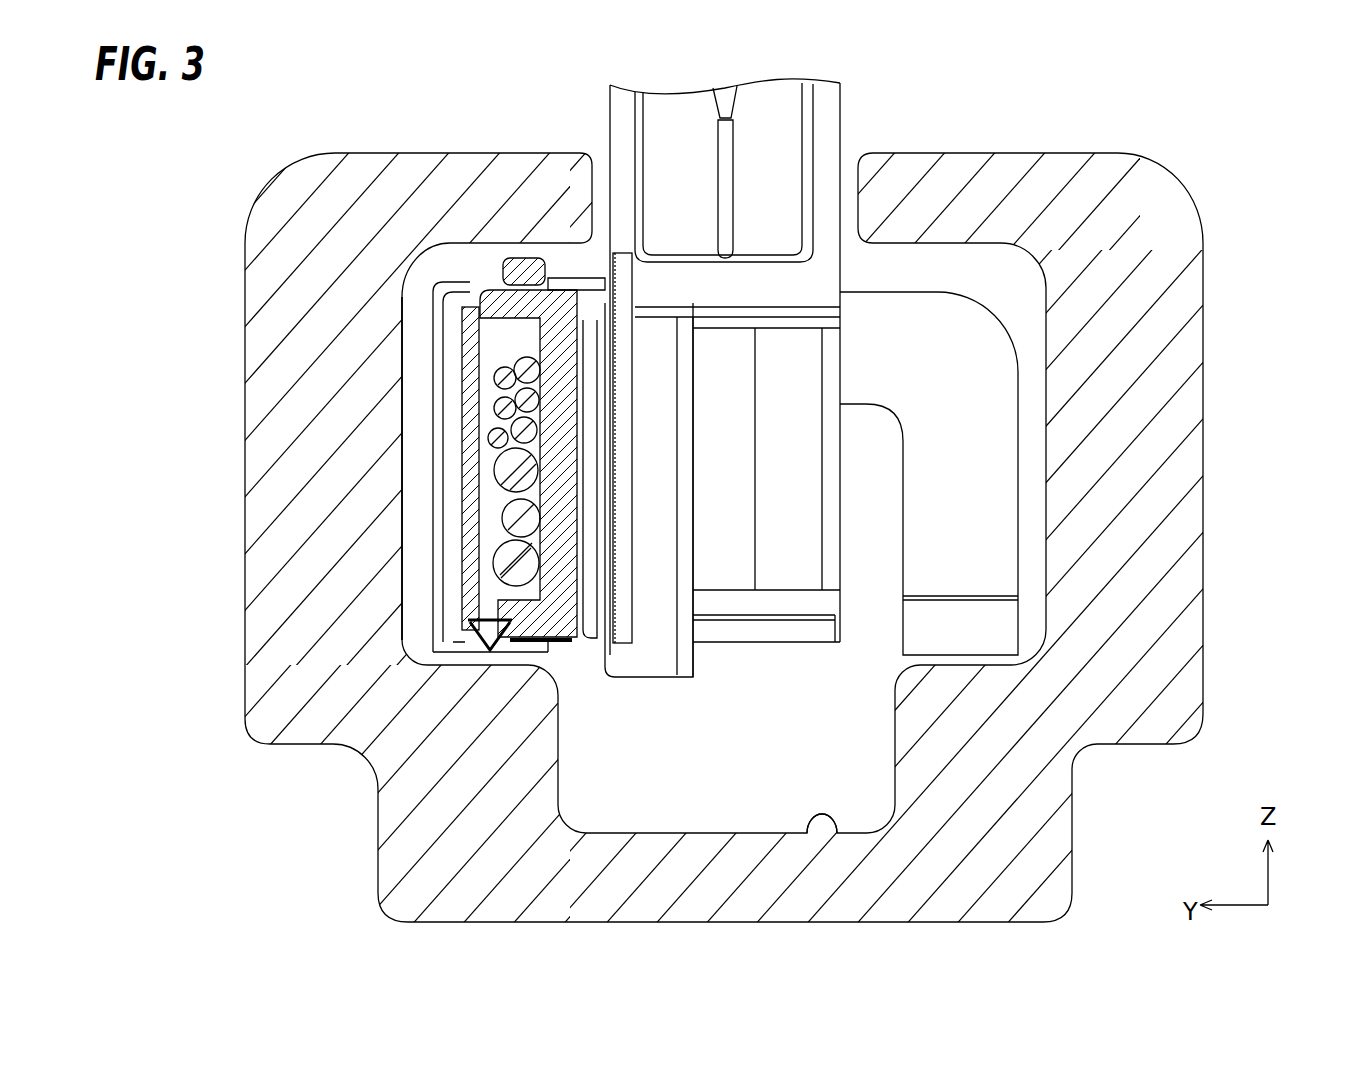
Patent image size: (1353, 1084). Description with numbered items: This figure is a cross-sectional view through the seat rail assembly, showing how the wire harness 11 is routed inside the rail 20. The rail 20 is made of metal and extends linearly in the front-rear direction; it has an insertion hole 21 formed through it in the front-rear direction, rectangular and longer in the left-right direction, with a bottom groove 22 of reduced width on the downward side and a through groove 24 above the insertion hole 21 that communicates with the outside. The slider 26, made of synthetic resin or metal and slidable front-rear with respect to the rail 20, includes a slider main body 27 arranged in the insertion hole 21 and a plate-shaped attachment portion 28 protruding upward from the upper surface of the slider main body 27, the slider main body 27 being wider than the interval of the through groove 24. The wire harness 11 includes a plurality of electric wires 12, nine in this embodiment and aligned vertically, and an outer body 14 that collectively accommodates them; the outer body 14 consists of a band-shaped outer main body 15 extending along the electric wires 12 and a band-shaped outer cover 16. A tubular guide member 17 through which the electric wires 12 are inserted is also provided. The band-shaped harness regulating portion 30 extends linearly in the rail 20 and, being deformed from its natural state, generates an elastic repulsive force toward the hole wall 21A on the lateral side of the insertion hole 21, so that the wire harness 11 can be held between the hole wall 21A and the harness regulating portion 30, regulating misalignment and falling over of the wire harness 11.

The wire harness 11 is at (544, 484).
The electric wire 12 is at (500, 442).
The outer body 14 is at (544, 450).
The outer main body 15 is at (547, 313).
The outer cover 16 is at (467, 325).
The guide member 17 is at (683, 218).
The rail 20 is at (1228, 497).
The insertion hole 21 is at (276, 468).
The hole wall 21A is at (417, 362).
The bottom groove 22 is at (838, 836).
The through groove 24 is at (602, 185).
The slider 26 is at (1074, 391).
The slider main body 27 is at (993, 317).
The attachment portion 28 is at (850, 127).
The harness regulating portion 30 is at (647, 645).